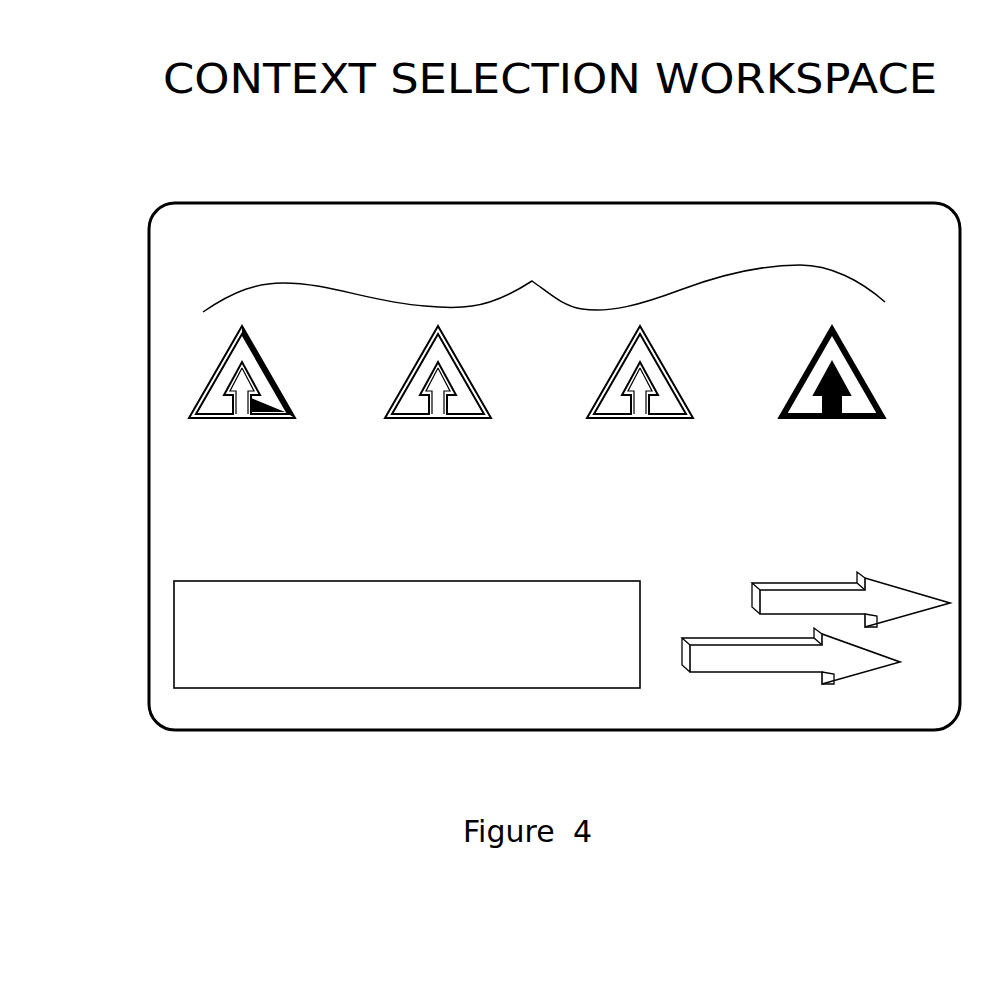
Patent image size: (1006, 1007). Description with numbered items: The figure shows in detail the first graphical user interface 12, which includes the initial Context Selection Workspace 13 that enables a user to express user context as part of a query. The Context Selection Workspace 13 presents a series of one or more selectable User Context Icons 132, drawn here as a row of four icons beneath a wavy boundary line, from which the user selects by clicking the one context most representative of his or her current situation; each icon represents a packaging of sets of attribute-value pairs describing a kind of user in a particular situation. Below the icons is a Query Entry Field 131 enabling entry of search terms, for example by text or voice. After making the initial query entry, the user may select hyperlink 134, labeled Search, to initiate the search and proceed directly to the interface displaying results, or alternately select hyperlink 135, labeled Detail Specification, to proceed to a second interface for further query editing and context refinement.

The first graphical user interface 12 is at (478, 199).
The Context Selection Workspace 13 is at (692, 238).
The Query Entry Field 131 is at (193, 628).
The User Context Icons 132 is at (544, 281).
The hyperlink 134 is at (756, 594).
The hyperlink 135 is at (694, 653).